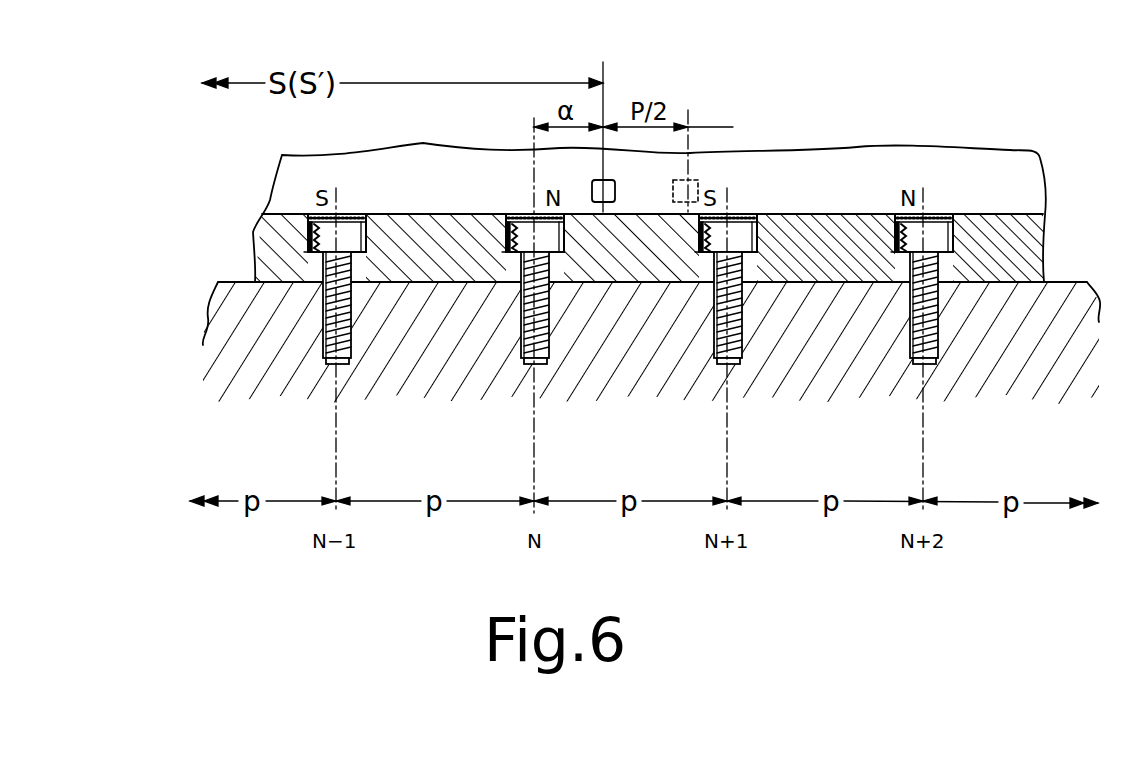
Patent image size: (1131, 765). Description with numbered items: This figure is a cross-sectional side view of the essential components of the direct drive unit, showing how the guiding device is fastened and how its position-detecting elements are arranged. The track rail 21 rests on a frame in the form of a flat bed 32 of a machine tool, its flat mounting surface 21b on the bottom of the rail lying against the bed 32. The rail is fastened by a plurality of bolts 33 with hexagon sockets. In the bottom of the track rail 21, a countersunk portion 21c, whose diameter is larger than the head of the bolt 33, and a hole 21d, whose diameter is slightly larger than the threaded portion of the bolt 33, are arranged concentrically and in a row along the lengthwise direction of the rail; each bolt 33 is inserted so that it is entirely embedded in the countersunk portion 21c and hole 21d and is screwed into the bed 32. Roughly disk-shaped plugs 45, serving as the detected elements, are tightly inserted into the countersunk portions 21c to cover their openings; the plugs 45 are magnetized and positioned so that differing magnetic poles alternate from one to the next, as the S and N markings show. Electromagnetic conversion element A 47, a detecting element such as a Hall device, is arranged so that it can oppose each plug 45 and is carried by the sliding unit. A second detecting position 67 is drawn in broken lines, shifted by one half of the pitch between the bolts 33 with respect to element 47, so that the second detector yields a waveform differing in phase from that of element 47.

The track rail 21 is at (1052, 134).
The mounting surface 21b is at (268, 287).
The countersunk portion 21c is at (316, 258).
The hole 21d is at (322, 262).
The bed 32 is at (1067, 296).
The bolt 33 is at (349, 330).
The plug 45 is at (353, 213).
The electromagnetic conversion element A 47 is at (615, 184).
The second sensor position 67 is at (698, 186).